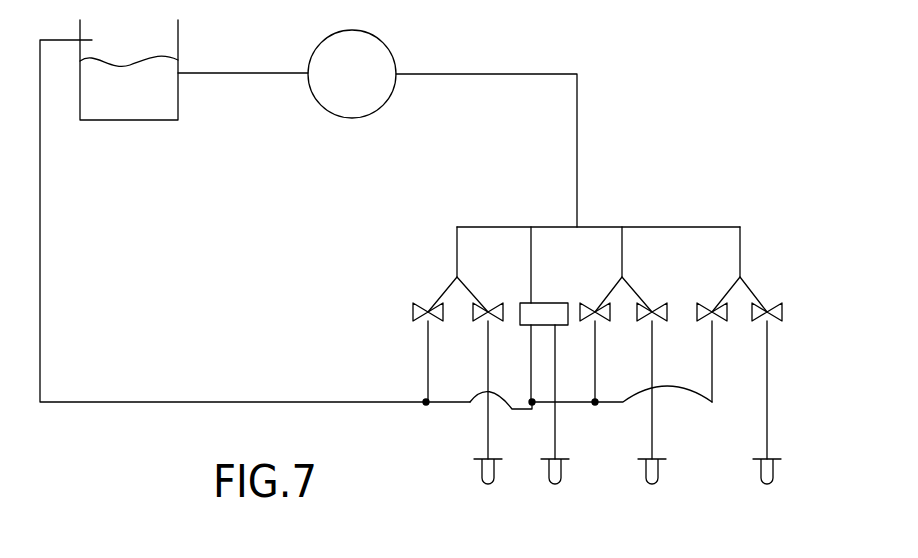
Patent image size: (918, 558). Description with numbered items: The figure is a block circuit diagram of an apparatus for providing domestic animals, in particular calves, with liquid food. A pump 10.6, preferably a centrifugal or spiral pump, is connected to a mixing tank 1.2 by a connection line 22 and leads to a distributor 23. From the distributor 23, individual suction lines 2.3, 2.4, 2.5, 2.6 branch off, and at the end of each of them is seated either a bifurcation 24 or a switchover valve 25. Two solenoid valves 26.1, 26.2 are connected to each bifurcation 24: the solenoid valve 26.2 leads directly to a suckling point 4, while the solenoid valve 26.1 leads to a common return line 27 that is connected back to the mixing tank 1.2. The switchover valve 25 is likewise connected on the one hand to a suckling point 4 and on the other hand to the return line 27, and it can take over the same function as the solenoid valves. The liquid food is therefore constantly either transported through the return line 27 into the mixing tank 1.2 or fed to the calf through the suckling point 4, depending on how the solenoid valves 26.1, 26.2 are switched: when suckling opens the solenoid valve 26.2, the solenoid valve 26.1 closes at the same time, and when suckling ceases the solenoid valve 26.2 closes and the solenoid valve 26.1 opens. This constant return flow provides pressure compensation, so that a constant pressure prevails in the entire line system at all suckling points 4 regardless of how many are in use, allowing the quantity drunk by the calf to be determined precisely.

The mixing tank 1.2 is at (162, 80).
The connection line 22 is at (245, 73).
The pump 10.6 is at (365, 73).
The distributor 23 is at (583, 224).
The suction line 2.3 is at (458, 246).
The suction line 2.4 is at (533, 262).
The suction line 2.5 is at (622, 247).
The suction line 2.6 is at (740, 250).
The bifurcation 24 is at (458, 277).
The switchover valve 25 is at (548, 313).
The solenoid valve 26.1 is at (415, 310).
The solenoid valve 26.2 is at (471, 318).
The return line 27 is at (162, 402).
The suckling point 4 is at (478, 488).